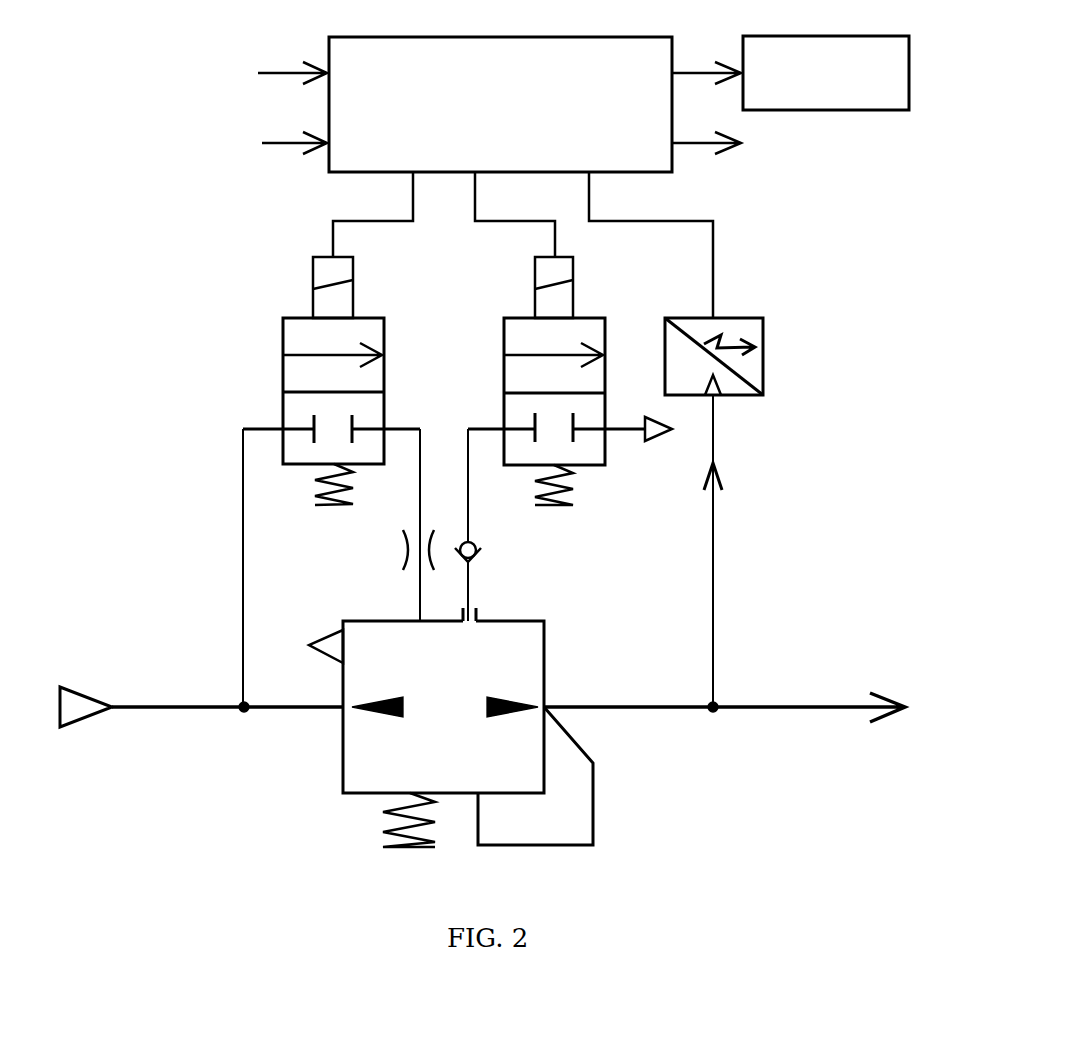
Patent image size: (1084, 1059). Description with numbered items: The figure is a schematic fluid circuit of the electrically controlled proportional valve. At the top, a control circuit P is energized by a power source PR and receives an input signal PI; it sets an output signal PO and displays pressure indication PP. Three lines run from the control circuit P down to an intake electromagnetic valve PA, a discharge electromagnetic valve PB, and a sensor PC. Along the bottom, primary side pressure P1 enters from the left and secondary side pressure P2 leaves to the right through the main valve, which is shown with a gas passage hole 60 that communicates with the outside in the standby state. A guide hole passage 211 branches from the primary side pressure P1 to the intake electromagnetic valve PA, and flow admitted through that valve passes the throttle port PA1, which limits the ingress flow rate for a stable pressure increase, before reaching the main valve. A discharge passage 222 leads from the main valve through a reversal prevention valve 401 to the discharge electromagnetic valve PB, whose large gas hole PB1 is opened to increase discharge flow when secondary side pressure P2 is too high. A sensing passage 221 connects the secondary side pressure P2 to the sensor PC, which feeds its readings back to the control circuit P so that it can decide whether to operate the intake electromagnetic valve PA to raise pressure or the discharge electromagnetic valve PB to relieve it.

The control circuit P is at (521, 177).
The power source PR is at (186, 73).
The input signal PI is at (199, 143).
The pressure indication PP is at (792, 73).
The output signal PO is at (821, 144).
The intake electromagnetic valve PA is at (283, 350).
The discharge electromagnetic valve PB is at (504, 350).
The large gas hole PB1 is at (660, 438).
The sensor PC is at (763, 347).
The throttle port PA1 is at (399, 546).
The reversal prevention valve 401 is at (478, 552).
The guide hole passage 211 is at (226, 582).
The discharge passage 222 is at (476, 586).
The sensing passage 221 is at (724, 588).
The gas passage hole 60 is at (309, 645).
The primary side pressure P1 is at (244, 712).
The secondary side pressure P2 is at (713, 712).